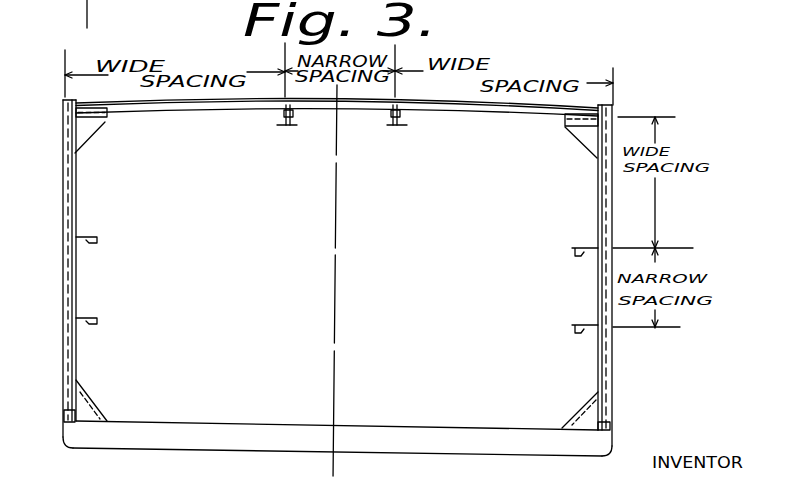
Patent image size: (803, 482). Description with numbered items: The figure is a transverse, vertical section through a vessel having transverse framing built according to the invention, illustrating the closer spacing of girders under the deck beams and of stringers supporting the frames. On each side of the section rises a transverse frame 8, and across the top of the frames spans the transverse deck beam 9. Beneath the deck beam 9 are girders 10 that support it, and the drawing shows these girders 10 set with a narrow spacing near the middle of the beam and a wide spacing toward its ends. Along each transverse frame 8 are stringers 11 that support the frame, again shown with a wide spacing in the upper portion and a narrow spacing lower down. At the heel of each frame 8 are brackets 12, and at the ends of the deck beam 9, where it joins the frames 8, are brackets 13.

The transverse frame 8 is at (70, 190).
The transverse deck beam 9 is at (215, 111).
The girders supporting the deck beam 10 is at (288, 128).
The stringers supporting the frame 11 is at (99, 240).
The brackets at the heel of the frame 12 is at (80, 402).
The brackets at the ends of the deck beam 13 is at (82, 138).